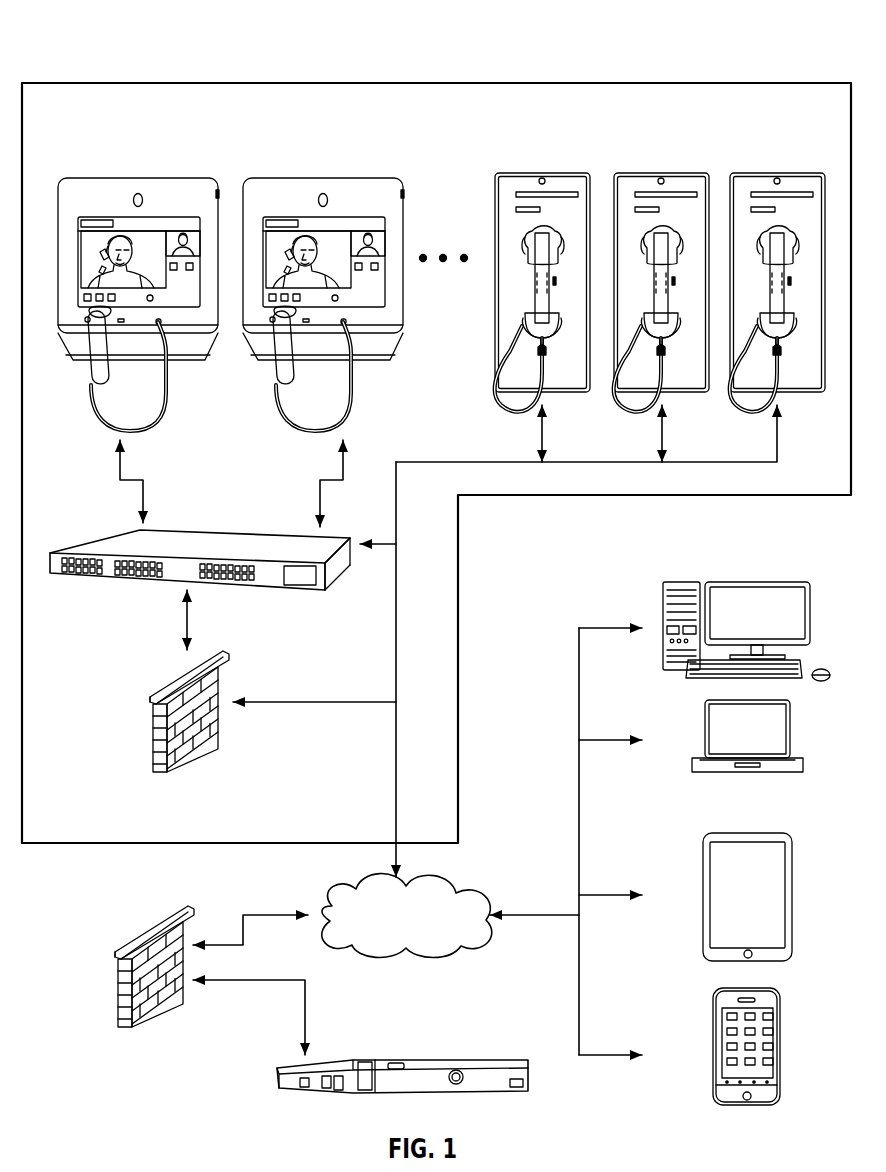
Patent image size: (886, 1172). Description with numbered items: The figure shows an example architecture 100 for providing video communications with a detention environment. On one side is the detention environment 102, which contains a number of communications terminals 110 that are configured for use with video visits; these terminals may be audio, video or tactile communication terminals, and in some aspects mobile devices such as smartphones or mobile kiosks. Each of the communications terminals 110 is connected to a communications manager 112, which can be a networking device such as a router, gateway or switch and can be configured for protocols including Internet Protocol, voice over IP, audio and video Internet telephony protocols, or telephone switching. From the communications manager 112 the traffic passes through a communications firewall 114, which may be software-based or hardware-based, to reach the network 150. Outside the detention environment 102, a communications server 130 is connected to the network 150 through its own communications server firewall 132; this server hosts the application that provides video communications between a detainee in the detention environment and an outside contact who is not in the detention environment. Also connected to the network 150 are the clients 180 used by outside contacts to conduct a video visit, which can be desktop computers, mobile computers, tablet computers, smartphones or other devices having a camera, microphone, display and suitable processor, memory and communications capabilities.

The architecture 100 is at (97, 47).
The detention environment 102 is at (790, 82).
The communications terminals 110 is at (358, 130).
The communications manager 112 is at (205, 467).
The communications firewall 114 is at (128, 784).
The communications server 130 is at (438, 998).
The communications server firewall 132 is at (98, 1033).
The network 150 is at (438, 886).
The clients 180 is at (748, 545).